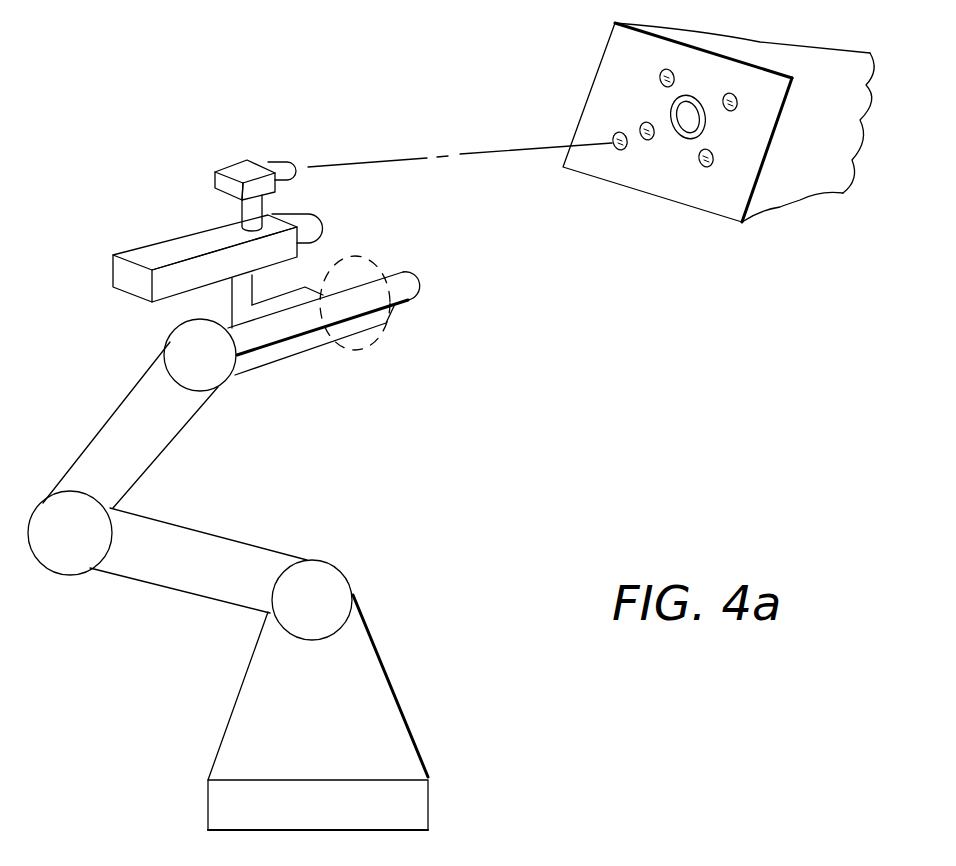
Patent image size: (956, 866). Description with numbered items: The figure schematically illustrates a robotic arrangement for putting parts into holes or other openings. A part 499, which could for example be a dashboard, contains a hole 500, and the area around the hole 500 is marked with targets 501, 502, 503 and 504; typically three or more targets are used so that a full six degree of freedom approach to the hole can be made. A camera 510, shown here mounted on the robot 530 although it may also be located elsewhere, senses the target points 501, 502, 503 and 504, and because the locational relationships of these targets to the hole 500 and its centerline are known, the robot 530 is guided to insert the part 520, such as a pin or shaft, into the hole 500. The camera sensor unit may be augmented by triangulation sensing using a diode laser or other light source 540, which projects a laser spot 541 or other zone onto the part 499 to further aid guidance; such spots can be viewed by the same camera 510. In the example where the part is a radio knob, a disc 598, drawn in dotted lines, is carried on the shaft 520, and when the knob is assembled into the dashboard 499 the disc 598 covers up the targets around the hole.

The part 499 is at (795, 183).
The hole 500 is at (707, 128).
The target 501 is at (733, 92).
The target 502 is at (703, 167).
The target 503 is at (641, 128).
The target 504 is at (660, 76).
The camera 510 is at (172, 248).
The part 520 is at (415, 300).
The robot 530 is at (377, 690).
The light source 540 is at (240, 158).
The laser spot 541 is at (622, 150).
The disc 598 is at (385, 360).